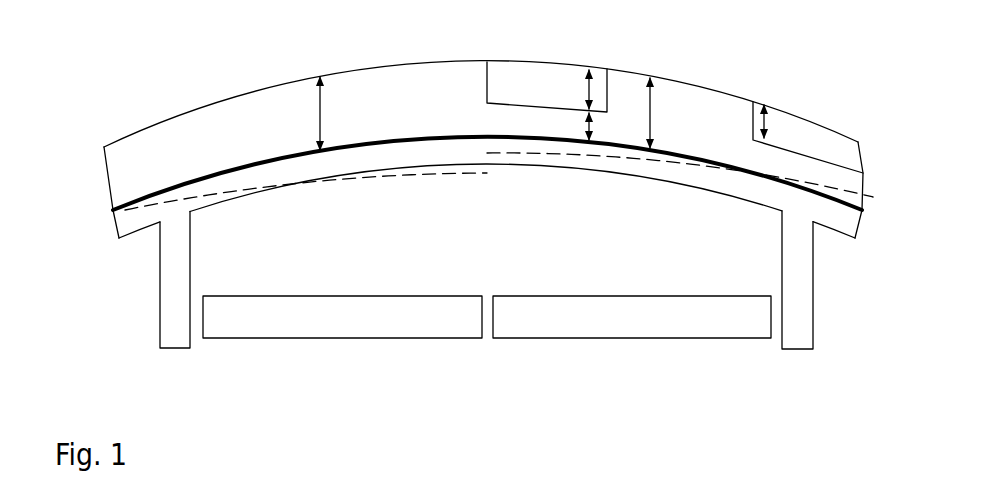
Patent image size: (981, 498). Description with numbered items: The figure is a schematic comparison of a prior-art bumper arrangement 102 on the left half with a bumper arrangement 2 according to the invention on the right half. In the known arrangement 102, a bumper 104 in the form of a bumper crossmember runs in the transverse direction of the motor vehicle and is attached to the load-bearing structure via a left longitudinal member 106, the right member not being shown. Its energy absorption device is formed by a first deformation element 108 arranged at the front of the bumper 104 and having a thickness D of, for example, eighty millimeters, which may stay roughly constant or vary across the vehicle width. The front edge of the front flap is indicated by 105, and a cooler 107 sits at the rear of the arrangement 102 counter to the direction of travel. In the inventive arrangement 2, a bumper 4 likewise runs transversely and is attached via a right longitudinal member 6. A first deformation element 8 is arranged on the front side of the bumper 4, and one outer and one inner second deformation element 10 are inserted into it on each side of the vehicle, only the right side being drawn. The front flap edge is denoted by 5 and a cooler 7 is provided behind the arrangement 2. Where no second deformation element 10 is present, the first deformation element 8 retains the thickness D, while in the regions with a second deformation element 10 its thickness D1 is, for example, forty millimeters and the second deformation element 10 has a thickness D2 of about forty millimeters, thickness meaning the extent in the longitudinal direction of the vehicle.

The bumper arrangement 2 is at (881, 196).
The bumper 4 is at (850, 222).
The front edge of the front flap 5 is at (621, 157).
The right longitudinal member 6 is at (804, 276).
The cooler 7 is at (571, 325).
The first deformation element 8 is at (704, 105).
The second deformation element 10 is at (543, 80).
The bumper arrangement 102 is at (95, 176).
The bumper 104 is at (118, 224).
The front edge of the front flap 105 is at (210, 203).
The left longitudinal member 106 is at (168, 275).
The cooler 107 is at (317, 324).
The first deformation element 108 is at (220, 112).
The thickness D is at (318, 103).
The thickness D1 is at (589, 137).
The thickness D2 is at (590, 92).